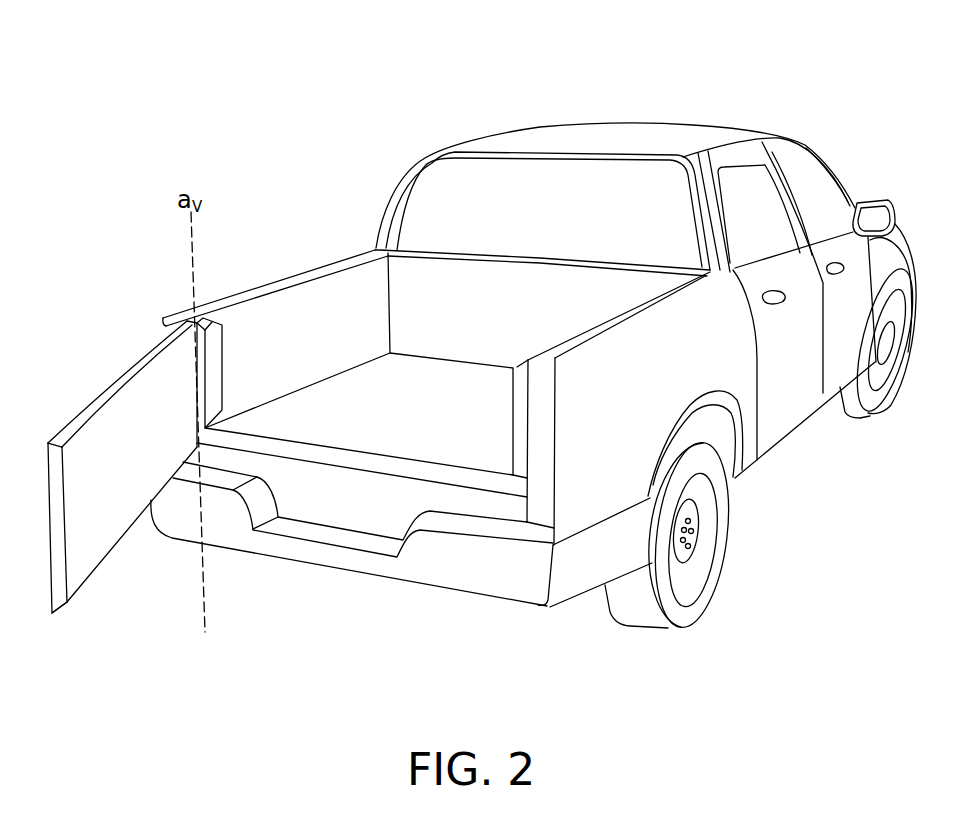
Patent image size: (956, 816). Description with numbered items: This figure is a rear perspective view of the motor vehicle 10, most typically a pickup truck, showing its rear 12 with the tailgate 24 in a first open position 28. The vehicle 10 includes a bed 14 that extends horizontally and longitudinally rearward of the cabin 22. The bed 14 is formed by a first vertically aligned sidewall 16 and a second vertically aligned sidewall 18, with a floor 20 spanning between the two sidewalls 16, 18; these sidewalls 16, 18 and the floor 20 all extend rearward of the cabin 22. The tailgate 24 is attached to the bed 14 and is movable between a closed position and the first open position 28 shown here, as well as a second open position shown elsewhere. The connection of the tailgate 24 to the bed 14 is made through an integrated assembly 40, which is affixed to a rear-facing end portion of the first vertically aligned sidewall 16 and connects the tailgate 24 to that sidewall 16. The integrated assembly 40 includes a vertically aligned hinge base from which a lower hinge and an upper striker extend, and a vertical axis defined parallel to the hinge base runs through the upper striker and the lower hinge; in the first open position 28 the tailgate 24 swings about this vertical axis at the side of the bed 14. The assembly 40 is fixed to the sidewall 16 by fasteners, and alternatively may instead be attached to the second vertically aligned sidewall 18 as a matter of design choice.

The motor vehicle 10 is at (575, 95).
The rear 12 is at (301, 603).
The bed 14 is at (372, 312).
The first vertically aligned sidewall 16 is at (268, 328).
The second vertically aligned sidewall 18 is at (640, 366).
The floor 20 is at (487, 383).
The cabin 22 is at (800, 167).
The tailgate 24 is at (107, 382).
The first open position 28 is at (44, 606).
The integrated assembly 40 is at (203, 367).